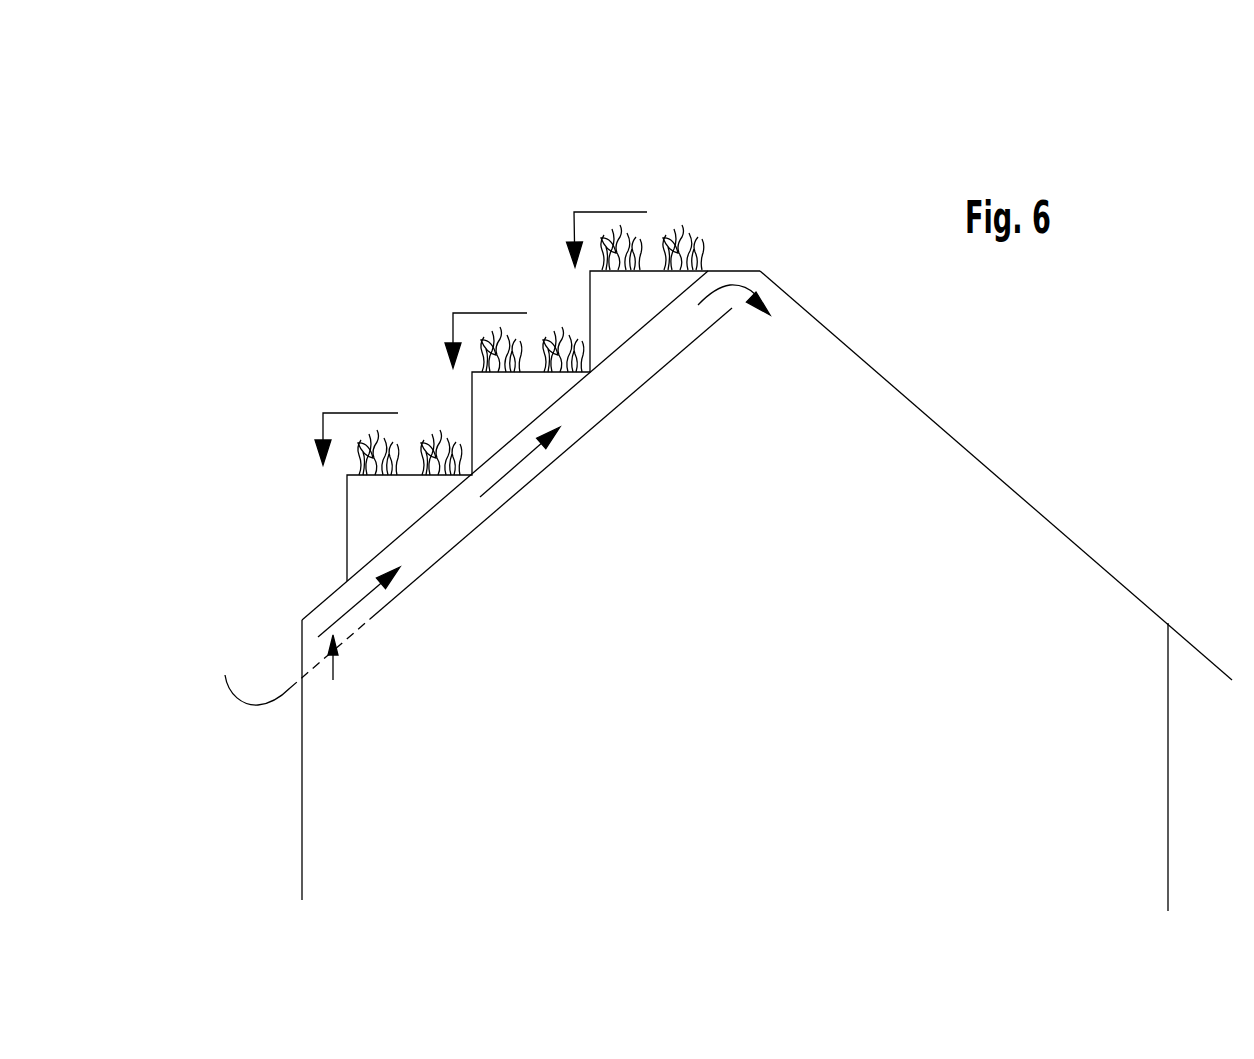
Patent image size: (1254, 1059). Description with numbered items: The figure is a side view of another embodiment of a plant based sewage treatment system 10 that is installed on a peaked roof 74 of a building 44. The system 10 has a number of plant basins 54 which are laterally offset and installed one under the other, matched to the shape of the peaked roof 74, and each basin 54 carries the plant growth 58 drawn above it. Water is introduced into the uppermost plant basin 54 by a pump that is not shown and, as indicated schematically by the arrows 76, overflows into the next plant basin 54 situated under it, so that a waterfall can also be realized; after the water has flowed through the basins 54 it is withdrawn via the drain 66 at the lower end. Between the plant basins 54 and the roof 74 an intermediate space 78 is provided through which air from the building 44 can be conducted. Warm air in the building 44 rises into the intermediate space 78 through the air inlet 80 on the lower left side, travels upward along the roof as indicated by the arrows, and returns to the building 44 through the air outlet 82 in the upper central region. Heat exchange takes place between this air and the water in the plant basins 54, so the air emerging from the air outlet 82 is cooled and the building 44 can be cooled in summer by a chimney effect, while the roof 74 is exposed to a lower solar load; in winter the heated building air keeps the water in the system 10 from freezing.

The plant based sewage treatment system 10 is at (433, 154).
The building 44 is at (813, 716).
The plant basin 54 is at (404, 516).
The flames 58 is at (433, 373).
The drain 66 is at (226, 630).
The peaked roof 74 is at (688, 347).
The arrows 76 is at (343, 413).
The intermediate space 78 is at (433, 535).
The air inlet 80 is at (338, 676).
The air outlet 82 is at (777, 317).